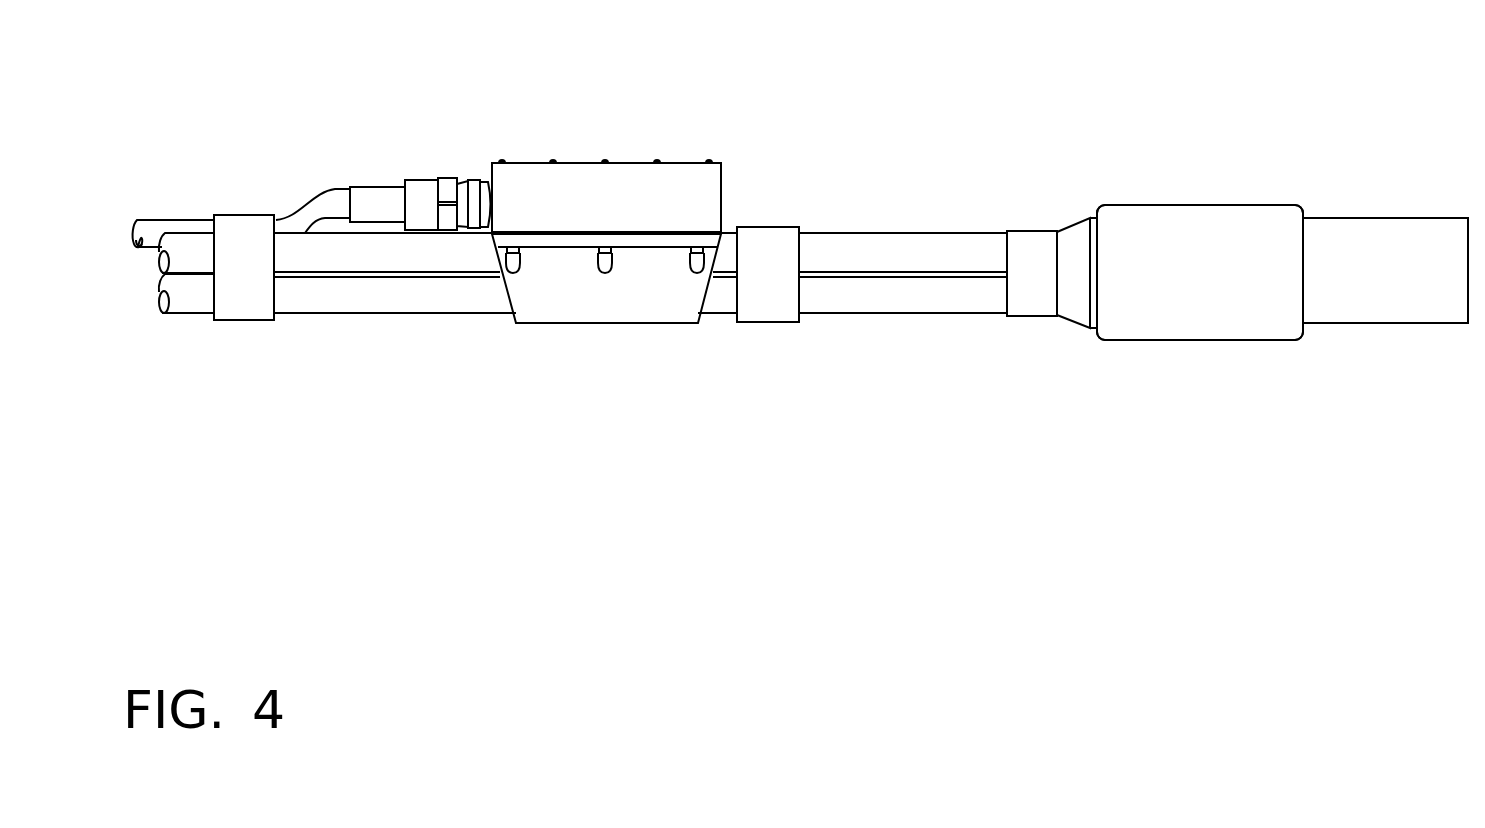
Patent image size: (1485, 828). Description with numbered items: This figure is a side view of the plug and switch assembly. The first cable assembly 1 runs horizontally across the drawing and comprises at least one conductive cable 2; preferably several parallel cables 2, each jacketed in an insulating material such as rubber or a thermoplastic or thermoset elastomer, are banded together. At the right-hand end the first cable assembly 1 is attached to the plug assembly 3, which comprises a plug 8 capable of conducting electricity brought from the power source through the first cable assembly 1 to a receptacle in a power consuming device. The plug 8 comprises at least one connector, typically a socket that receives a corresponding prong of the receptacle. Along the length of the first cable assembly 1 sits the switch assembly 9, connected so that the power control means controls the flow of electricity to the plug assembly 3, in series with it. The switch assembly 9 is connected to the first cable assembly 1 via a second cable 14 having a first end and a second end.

The first cable assembly 1 is at (860, 313).
The conductive cable 2 is at (887, 245).
The plug assembly 3 is at (1233, 202).
The plug 8 is at (1183, 327).
The switch assembly 9 is at (580, 163).
The second cable 14 is at (302, 205).